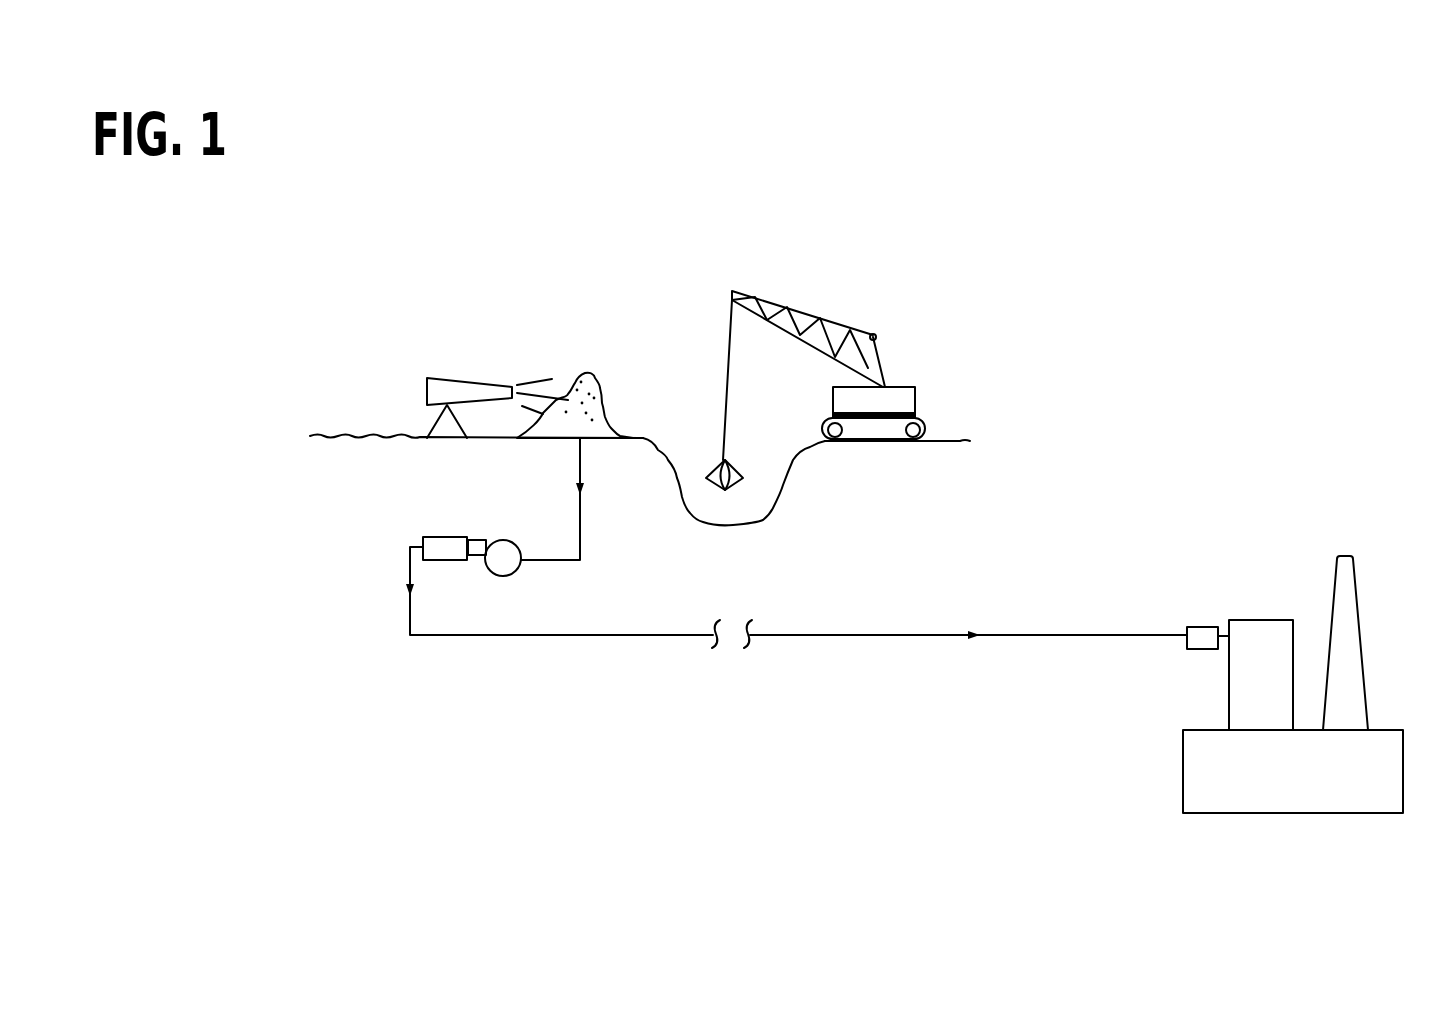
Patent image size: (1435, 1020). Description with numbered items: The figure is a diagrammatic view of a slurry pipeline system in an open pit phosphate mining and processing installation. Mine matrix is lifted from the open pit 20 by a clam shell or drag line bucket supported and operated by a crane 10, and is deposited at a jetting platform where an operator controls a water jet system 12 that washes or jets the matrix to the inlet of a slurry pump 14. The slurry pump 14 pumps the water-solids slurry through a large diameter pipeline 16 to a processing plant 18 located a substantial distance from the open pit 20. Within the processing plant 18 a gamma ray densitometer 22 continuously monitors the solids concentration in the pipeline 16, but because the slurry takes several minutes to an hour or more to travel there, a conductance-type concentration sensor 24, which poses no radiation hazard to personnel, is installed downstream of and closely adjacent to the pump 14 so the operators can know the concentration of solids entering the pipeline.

The crane 10 is at (888, 327).
The water jet system 12 is at (421, 375).
The slurry pump 14 is at (598, 600).
The pipeline 16 is at (846, 630).
The processing plant 18 is at (1328, 586).
The open pit 20 is at (752, 503).
The gamma ray densitometer 22 is at (1183, 621).
The concentration sensor 24 is at (417, 530).